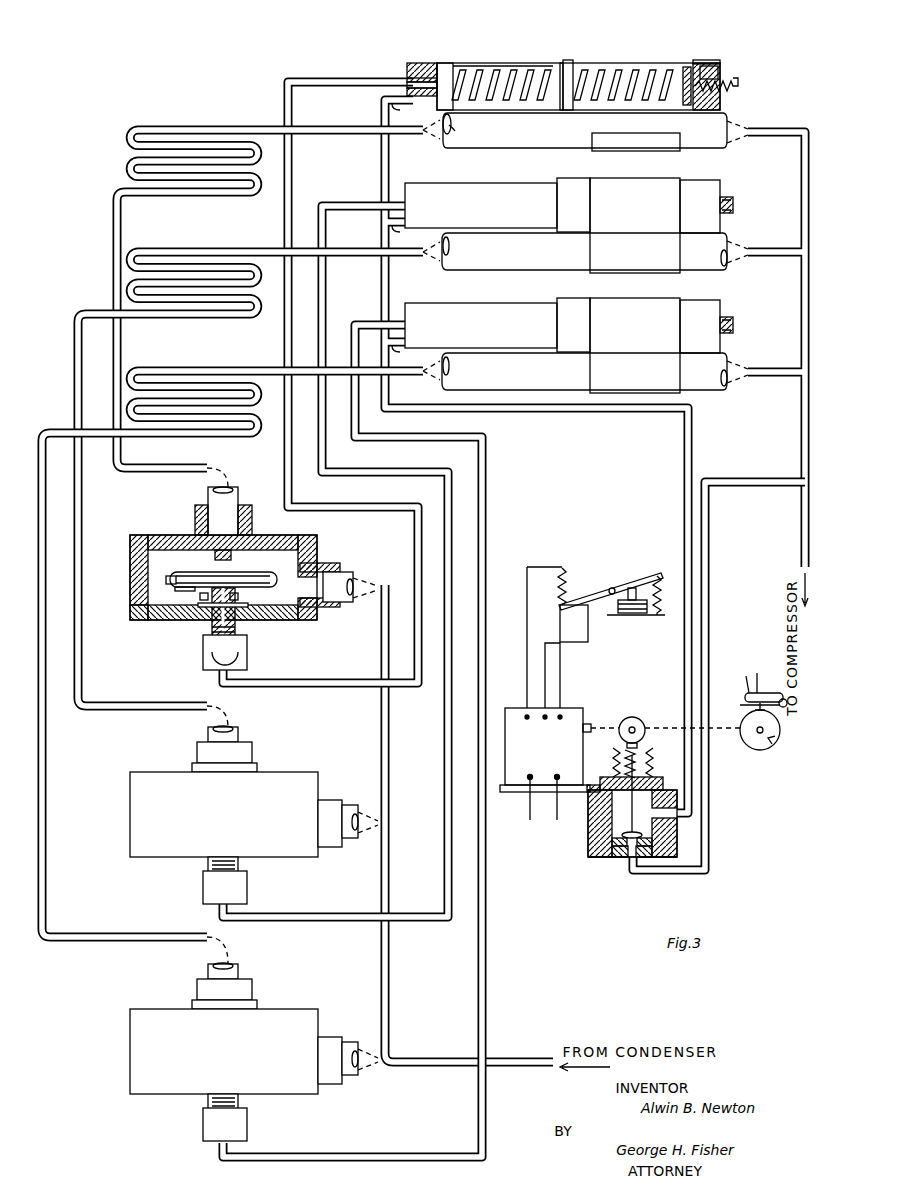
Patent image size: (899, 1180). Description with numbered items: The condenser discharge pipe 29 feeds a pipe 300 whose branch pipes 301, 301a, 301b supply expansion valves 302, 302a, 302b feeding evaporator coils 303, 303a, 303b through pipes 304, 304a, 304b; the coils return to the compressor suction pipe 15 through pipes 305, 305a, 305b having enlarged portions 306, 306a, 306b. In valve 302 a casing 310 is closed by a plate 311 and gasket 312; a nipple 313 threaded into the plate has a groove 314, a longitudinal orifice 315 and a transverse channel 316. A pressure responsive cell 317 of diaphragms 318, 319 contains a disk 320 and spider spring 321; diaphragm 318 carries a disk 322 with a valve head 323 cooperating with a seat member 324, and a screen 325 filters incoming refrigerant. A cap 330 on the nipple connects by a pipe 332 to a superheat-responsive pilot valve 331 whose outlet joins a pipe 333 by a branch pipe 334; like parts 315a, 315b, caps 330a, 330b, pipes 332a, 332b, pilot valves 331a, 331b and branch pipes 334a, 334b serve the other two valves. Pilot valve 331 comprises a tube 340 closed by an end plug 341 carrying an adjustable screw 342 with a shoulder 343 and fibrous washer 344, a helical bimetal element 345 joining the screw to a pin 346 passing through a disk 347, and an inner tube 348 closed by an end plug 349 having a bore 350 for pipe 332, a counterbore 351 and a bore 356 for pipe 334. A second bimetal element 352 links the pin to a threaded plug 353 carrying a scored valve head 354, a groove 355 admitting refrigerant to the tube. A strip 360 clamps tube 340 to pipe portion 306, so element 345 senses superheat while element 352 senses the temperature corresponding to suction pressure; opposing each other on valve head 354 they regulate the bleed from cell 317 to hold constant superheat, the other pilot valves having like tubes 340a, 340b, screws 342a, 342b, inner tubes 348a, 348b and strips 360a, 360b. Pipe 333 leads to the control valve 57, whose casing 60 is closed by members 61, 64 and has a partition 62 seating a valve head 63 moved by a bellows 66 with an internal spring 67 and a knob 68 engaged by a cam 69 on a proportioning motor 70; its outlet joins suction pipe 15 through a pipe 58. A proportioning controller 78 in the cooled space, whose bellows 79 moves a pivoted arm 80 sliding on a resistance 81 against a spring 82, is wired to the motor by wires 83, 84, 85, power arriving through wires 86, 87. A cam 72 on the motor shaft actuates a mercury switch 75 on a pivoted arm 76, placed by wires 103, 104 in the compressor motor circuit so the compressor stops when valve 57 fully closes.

The suction pipe 15 is at (800, 445).
The discharge pipe 29 is at (505, 1057).
The control valve 57 is at (582, 851).
The pipe 58 is at (708, 610).
The casing 60 is at (680, 820).
The closure member 61 is at (620, 857).
The internal partition 62 is at (644, 836).
The valve head 63 is at (652, 844).
The closure member 64 is at (658, 780).
The bellows 66 is at (650, 762).
The coil spring 67 is at (616, 760).
The knob 68 is at (640, 744).
The cam 69 is at (640, 724).
The proportioning motor 70 is at (550, 750).
The cam 72 is at (775, 738).
The mercury switch 75 is at (775, 693).
The pivoted arm 76 is at (785, 707).
The proportioning controller 78 is at (615, 543).
The bellows 79 is at (632, 615).
The pivoted arm 80 is at (600, 590).
The electric resistance 81 is at (558, 590).
The coil spring 82 is at (666, 595).
The wire 83 is at (527, 650).
The wire 84 is at (562, 668).
The wire 85 is at (548, 643).
The wire 86 is at (527, 806).
The wire 87 is at (554, 806).
The wire 103 is at (760, 674).
The wire 104 is at (746, 678).
The pipe 300 is at (390, 862).
The branch pipe 301 is at (345, 576).
The branch pipe 301a is at (352, 806).
The branch pipe 301b is at (352, 1043).
The expansion valve 302 is at (321, 533).
The expansion valve 302a is at (289, 769).
The expansion valve 302b is at (289, 1006).
The evaporator coil 303 is at (252, 198).
The evaporator coil 303a is at (252, 320).
The evaporator coil 303b is at (252, 438).
The pipe 304 is at (113, 277).
The pipe 304a is at (82, 497).
The pipe 304b is at (47, 847).
The pipe 305 is at (350, 133).
The pipe 305a is at (346, 257).
The pipe 305b is at (413, 378).
The enlarged pipe portion 306 is at (545, 148).
The enlarged pipe portion 306a is at (527, 270).
The enlarged pipe portion 306b is at (517, 390).
The casing 310 is at (130, 574).
The plate 311 is at (150, 620).
The gasket 312 is at (132, 612).
The nipple member 313 is at (236, 625).
The annular groove 314 is at (238, 600).
The longitudinal orifice 315 is at (236, 640).
The threaded fitting 315a is at (205, 863).
The threaded fitting 315b is at (205, 1100).
The transverse orifice 316 is at (205, 607).
The pressure responsive cell 317 is at (252, 570).
The upper diaphragm 318 is at (317, 548).
The lower diaphragm 319 is at (327, 566).
The circular disk 320 is at (181, 596).
The spring member 321 is at (192, 578).
The disk 322 is at (210, 555).
The valve head 323 is at (252, 515).
The removable seat member 324 is at (224, 511).
The ring shaped screen member 325 is at (310, 615).
The cap 330 is at (247, 661).
The outlet fitting 330a is at (247, 886).
The outlet fitting 330b is at (247, 1128).
The pilot valve 331 is at (519, 55).
The control unit 331a is at (475, 180).
The control unit 331b is at (480, 300).
The pipe 332 is at (292, 194).
The return line 332a is at (448, 740).
The return line 332b is at (480, 973).
The pipe 333 is at (390, 294).
The branch pipe 334 is at (385, 103).
The connecting line 334a is at (404, 236).
The connecting line 334b is at (405, 355).
The tube 340 is at (705, 63).
The end block 340a is at (700, 181).
The end block 340b is at (700, 301).
The end plug 341 is at (720, 70).
The manually adjustable screw 342 is at (733, 90).
The spring 342a is at (733, 200).
The spring 342b is at (733, 320).
The shoulder 343 is at (688, 63).
The fibrous washer 344 is at (720, 62).
The helical bimetal element 345 is at (620, 70).
The pin 346 is at (570, 60).
The disk 347 is at (560, 63).
The tube 348 is at (450, 63).
The casing 348a is at (442, 183).
The casing 348b is at (422, 303).
The end plug 349 is at (407, 66).
The bore 350 is at (407, 76).
The counterbore 351 is at (420, 63).
The second helical bimetal element 352 is at (488, 70).
The screw-threaded plug 353 is at (462, 62).
The valve head 354 is at (407, 92).
The longitudinal groove 355 is at (455, 131).
The bore 356 is at (390, 130).
The metal strip 360 is at (640, 148).
The heater 360a is at (612, 273).
The heater 360b is at (690, 393).